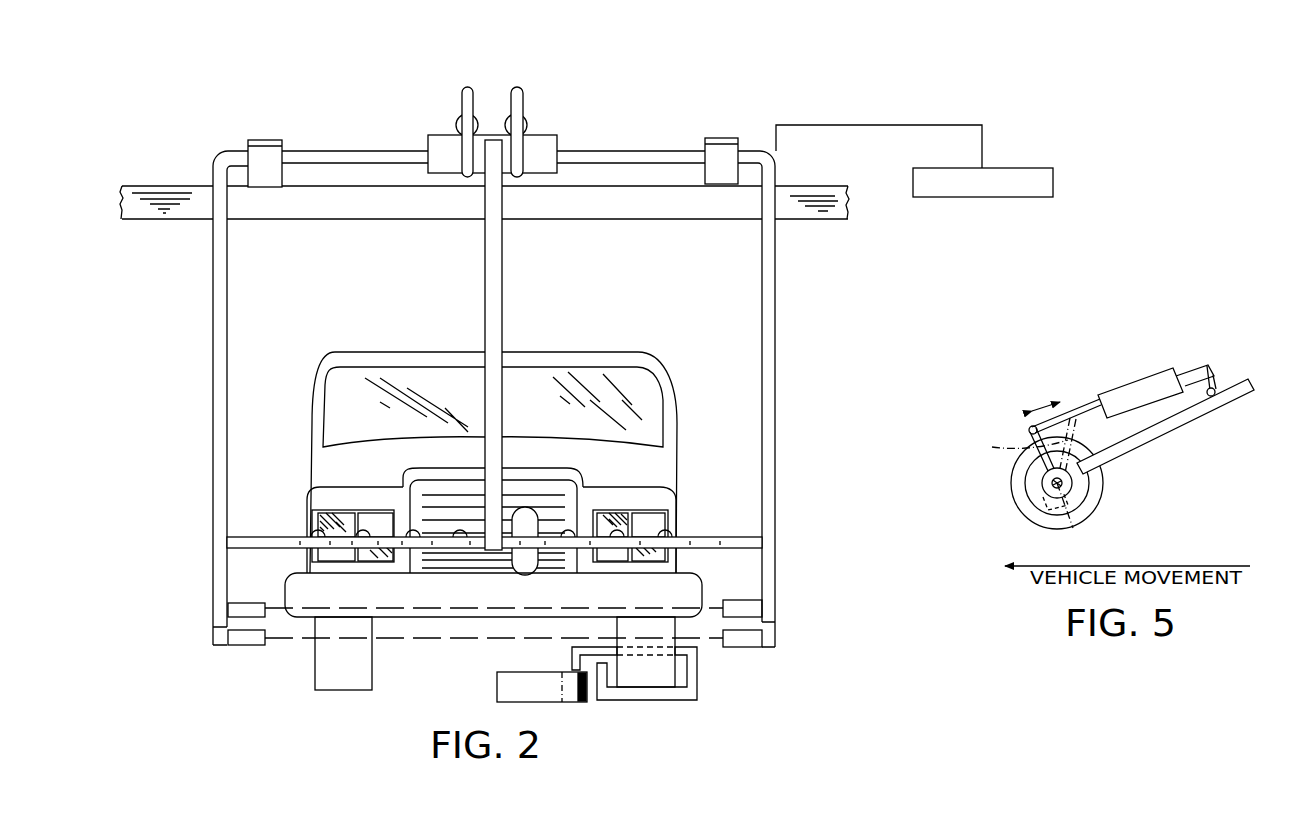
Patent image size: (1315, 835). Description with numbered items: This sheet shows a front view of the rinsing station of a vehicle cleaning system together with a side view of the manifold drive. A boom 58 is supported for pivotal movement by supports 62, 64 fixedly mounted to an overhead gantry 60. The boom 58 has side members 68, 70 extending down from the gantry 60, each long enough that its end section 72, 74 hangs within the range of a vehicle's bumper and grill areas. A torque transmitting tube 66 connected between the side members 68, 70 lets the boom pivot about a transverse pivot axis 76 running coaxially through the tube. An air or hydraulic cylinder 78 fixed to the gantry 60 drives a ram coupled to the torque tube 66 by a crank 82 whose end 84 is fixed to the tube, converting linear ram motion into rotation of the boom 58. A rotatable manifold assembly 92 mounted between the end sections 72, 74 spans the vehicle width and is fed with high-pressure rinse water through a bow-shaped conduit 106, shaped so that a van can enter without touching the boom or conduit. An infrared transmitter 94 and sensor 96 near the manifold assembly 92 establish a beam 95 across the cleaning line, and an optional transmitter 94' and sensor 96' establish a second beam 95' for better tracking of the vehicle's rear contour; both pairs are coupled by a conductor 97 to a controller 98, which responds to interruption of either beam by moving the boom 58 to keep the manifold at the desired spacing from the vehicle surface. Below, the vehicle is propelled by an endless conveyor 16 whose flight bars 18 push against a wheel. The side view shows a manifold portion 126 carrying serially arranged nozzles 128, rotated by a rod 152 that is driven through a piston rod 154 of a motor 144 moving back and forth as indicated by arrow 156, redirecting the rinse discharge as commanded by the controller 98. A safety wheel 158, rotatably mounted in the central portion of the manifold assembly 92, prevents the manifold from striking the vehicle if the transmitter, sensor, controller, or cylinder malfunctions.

In FIG. 2, the endless conveyor 16 is at (520, 672).
In FIG. 2, the flight bar 18 is at (572, 648).
In FIG. 2, the boom 58 is at (657, 123).
In FIG. 2, the gantry 60 is at (797, 184).
In FIG. 2, the support 62 is at (256, 140).
In FIG. 2, the support 64 is at (727, 136).
In FIG. 2, the torque transmitting tube 66 is at (360, 150).
In FIG. 2, the side member 68 is at (228, 258).
In FIG. 2, the side member 70 is at (776, 258).
In FIG. 2, the end section 72 is at (228, 573).
In FIG. 2, the end section 74 is at (762, 560).
In FIG. 2, the pivot axis 76 is at (135, 158).
In FIG. 2, the cylinder 78 is at (505, 122).
In FIG. 2, the crank 82 is at (523, 137).
In FIG. 2, the crank end 84 is at (462, 148).
In FIG. 2, the manifold assembly 92 is at (695, 516).
In FIG. 2, the infrared transmitter 94 is at (767, 599).
In FIG. 2, the optional transmitter 94' is at (752, 653).
In FIG. 2, the beam of energy 95 is at (494, 594).
In FIG. 2, the second beam 95' is at (494, 656).
In FIG. 2, the sensor 96 is at (253, 597).
In FIG. 2, the optional sensor 96' is at (248, 652).
In FIG. 2, the conductor 97 is at (990, 135).
In FIG. 2, the controller 98 is at (1040, 167).
In FIG. 2, the bow-shaped conduit 106 is at (502, 298).
In FIG. 5, the bow-shaped conduit 106 is at (1240, 387).
In FIG. 5, the manifold portion 126 is at (1092, 484).
In FIG. 5, the nozzle 128 is at (1068, 516).
In FIG. 5, the motor 144 is at (1142, 376).
In FIG. 5, the rod 152 is at (1028, 437).
In FIG. 5, the piston rod 154 is at (1082, 405).
In FIG. 5, the arrow 156 is at (1043, 407).
In FIG. 5, the safety wheel 158 is at (1012, 475).